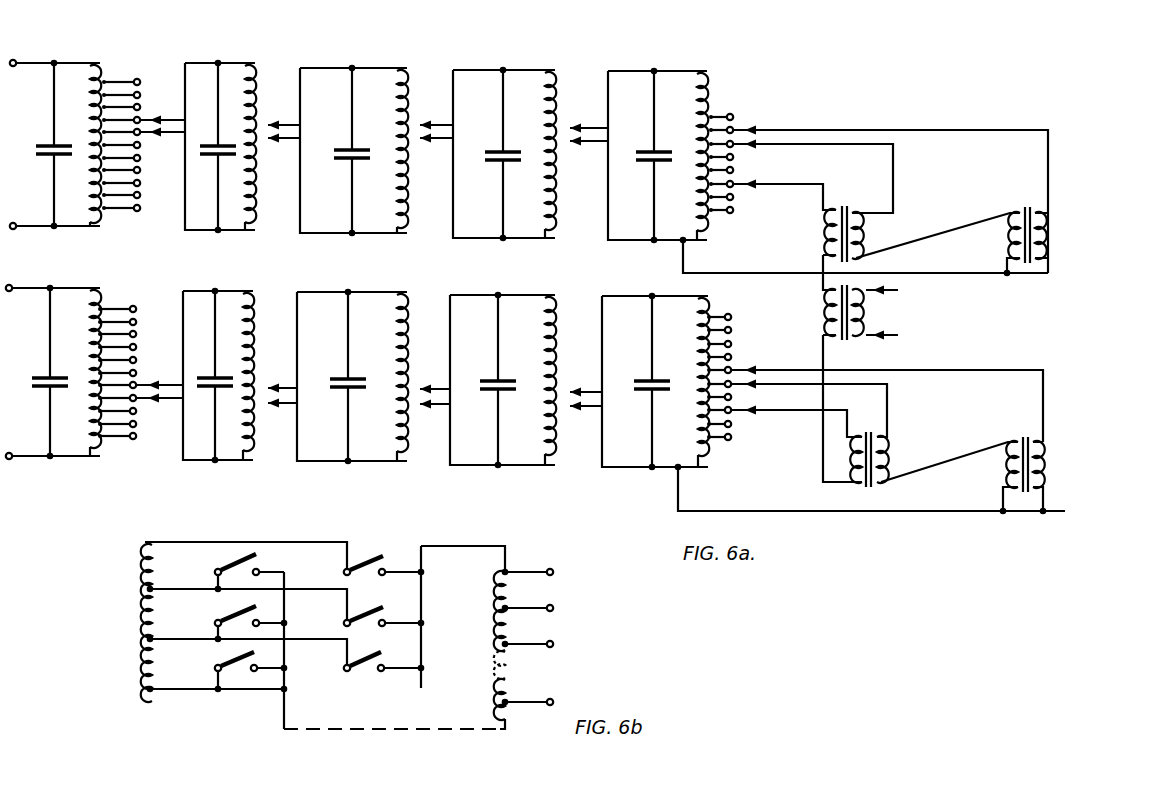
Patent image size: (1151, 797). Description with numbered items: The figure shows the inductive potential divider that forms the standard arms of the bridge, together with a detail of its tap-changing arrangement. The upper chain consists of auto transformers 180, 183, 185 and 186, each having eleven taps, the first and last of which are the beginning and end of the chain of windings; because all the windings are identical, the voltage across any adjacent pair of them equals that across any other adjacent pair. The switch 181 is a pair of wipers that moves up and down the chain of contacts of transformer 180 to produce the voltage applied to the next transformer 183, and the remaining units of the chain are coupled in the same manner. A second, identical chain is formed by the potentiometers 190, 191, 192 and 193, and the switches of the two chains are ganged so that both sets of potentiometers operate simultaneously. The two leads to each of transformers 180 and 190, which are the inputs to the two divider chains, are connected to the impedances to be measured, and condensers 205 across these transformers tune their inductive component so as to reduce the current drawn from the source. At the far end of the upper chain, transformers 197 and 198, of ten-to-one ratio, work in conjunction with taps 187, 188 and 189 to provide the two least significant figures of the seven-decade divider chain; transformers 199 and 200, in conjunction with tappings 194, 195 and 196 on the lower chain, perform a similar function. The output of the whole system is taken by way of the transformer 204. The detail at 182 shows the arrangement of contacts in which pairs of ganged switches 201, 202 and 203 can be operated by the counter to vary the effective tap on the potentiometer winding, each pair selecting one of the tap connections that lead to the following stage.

In FIG. 6a, the auto transformer 180 is at (135, 54).
In FIG. 6a, the switch 181 is at (165, 119).
In FIG. 6b, the arrangement of contacts 182 is at (330, 709).
In FIG. 6a, the auto transformer 183 is at (240, 54).
In FIG. 6a, the auto transformer 185 is at (427, 56).
In FIG. 6a, the auto transformer 186 is at (592, 59).
In FIG. 6a, the tap 187 is at (758, 187).
In FIG. 6a, the tap 188 is at (762, 146).
In FIG. 6a, the tap 189 is at (768, 130).
In FIG. 6a, the auto transformer 190 is at (147, 289).
In FIG. 6a, the potentiometer 191 is at (290, 291).
In FIG. 6a, the potentiometer 192 is at (445, 294).
In FIG. 6a, the potentiometer 193 is at (595, 296).
In FIG. 6a, the tapping 194 is at (760, 412).
In FIG. 6a, the tapping 195 is at (780, 388).
In FIG. 6a, the tapping 196 is at (768, 364).
In FIG. 6a, the transformer 197 is at (852, 200).
In FIG. 6a, the transformer 198 is at (1028, 212).
In FIG. 6a, the transformer 199 is at (870, 484).
In FIG. 6a, the transformer 200 is at (1008, 469).
In FIG. 6b, the ganged switch 201 is at (227, 563).
In FIG. 6b, the ganged switch 202 is at (228, 616).
In FIG. 6b, the ganged switch 203 is at (228, 661).
In FIG. 6a, the transformer 204 is at (843, 330).
In FIG. 6a, the condenser 205 is at (35, 153).